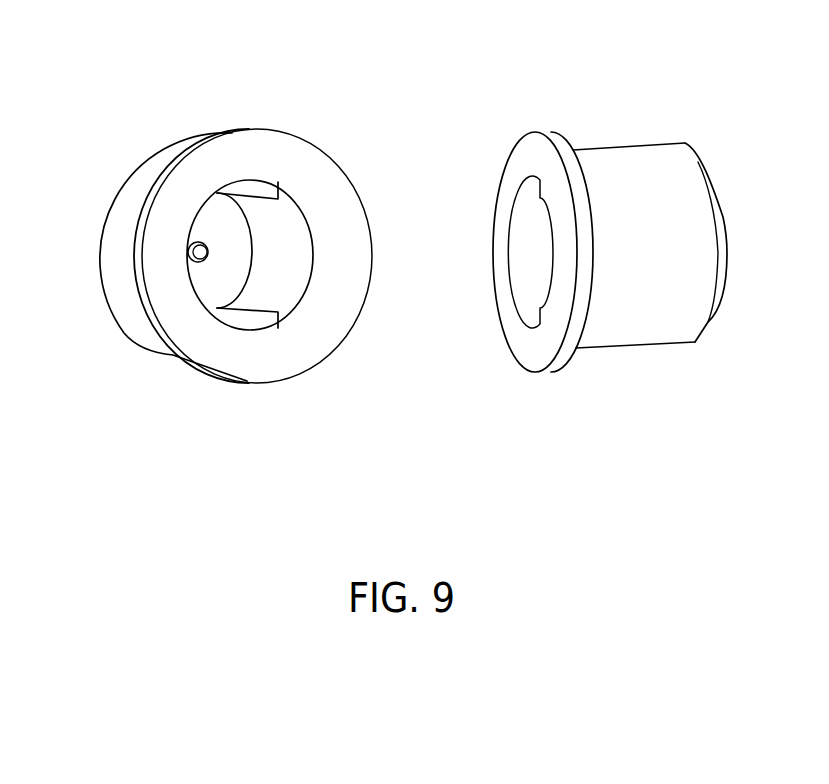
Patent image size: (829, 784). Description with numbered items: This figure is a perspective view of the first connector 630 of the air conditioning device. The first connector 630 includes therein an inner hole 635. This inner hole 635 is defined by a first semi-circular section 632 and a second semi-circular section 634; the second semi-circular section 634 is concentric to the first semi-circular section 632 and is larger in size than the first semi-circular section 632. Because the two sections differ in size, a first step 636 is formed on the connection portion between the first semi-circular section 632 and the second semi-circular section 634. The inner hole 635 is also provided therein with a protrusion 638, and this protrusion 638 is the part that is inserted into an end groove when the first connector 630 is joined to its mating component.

The first connector 630 is at (357, 97).
The first semi-circular section 632 is at (307, 223).
The second semi-circular section 634 is at (197, 208).
The inner hole 635 is at (271, 250).
The first step 636 is at (265, 190).
The protrusion 638 is at (188, 257).